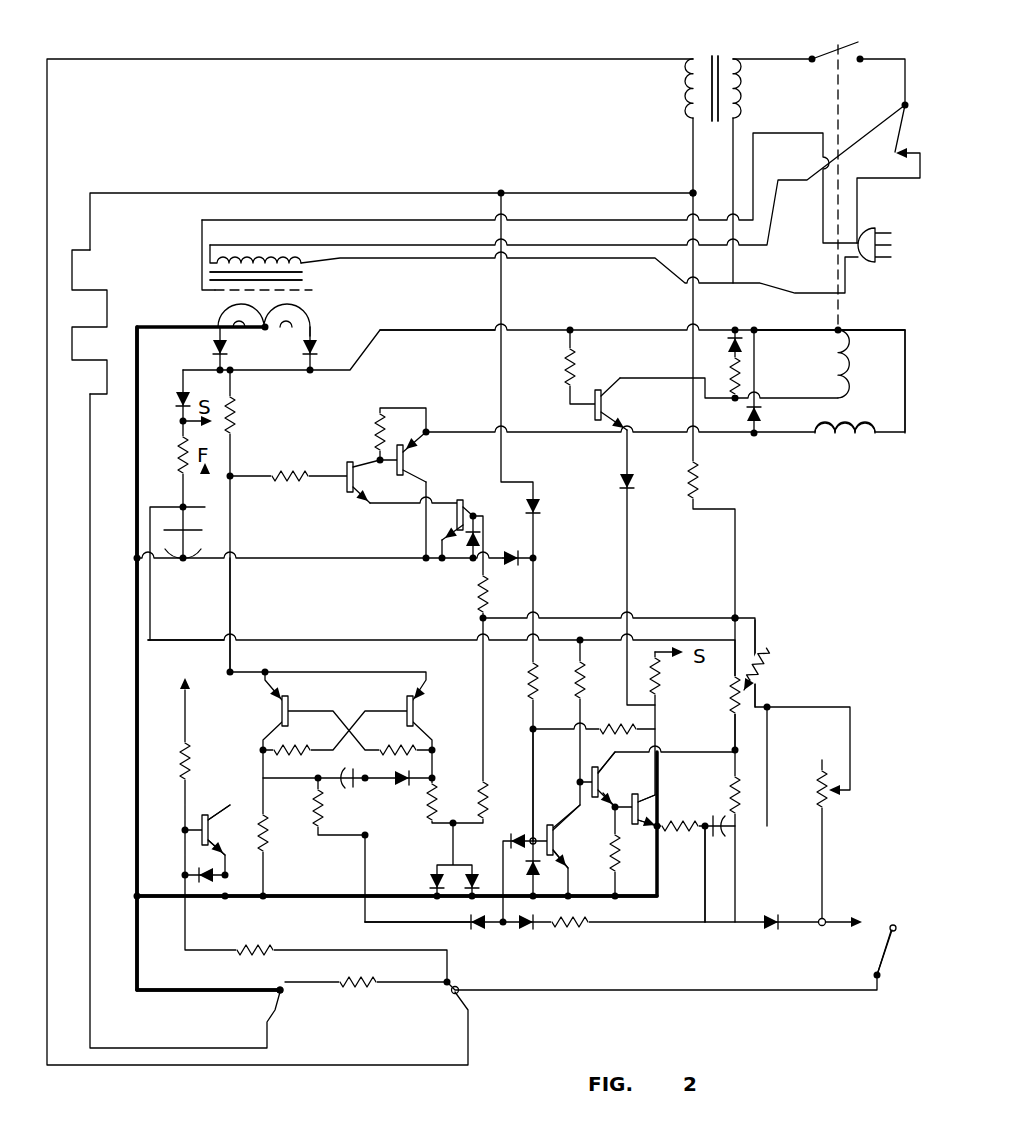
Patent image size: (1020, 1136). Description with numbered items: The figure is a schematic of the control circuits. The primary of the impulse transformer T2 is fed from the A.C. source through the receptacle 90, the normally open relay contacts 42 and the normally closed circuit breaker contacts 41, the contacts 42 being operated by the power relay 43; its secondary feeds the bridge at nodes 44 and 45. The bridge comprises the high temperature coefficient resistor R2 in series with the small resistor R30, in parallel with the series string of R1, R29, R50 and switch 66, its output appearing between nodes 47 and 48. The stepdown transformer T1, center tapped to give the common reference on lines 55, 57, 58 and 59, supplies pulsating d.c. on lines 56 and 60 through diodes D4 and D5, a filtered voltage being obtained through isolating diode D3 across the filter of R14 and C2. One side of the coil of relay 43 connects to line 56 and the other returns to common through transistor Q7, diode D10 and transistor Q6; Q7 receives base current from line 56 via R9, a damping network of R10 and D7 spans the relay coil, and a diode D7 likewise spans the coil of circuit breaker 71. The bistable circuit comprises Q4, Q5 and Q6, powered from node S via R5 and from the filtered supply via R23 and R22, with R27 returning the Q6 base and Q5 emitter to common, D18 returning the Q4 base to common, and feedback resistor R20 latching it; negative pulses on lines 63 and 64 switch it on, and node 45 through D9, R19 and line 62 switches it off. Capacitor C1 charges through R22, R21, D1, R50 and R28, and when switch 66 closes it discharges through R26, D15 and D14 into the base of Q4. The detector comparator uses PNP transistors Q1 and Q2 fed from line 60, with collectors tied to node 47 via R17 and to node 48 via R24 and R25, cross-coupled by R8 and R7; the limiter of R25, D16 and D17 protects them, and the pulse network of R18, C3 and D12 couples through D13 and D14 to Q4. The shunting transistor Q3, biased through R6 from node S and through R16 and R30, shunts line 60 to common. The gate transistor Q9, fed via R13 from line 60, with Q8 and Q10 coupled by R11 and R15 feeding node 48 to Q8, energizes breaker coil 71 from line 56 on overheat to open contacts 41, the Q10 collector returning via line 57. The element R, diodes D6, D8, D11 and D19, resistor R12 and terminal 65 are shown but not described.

The low voltage stepdown transformer T1 is at (272, 285).
The high current generating impulse transformer T2 is at (707, 70).
The resistor R2 is at (96, 296).
The relay contacts 42 is at (820, 64).
The circuit breaker contacts 41 is at (890, 140).
The node 45 is at (690, 190).
The receptacle 90 is at (866, 230).
The line 56 is at (622, 330).
The relay R is at (803, 381).
The diode D6 is at (730, 340).
The resistor R10 is at (745, 385).
The power relay 43 is at (848, 381).
The diode D7 is at (762, 412).
The circuit breaker 71 is at (880, 440).
The resistor R1 is at (701, 488).
The resistor R9 is at (576, 372).
The transistor Q7 is at (606, 404).
The diode D10 is at (634, 486).
The diode D9 is at (541, 510).
The diode D4 is at (212, 346).
The diode D5 is at (302, 340).
The isolating diode D3 is at (178, 398).
The resistor R12 is at (239, 418).
The resistor R14 is at (175, 452).
The capacitor C2 is at (200, 533).
The resistor R13 is at (296, 487).
The resistor R11 is at (373, 412).
The transistor Q9 is at (350, 470).
The transistor Q10 is at (406, 460).
The transistor Q8 is at (473, 499).
The diode D19 is at (480, 536).
The diode D8 is at (511, 579).
The resistor R15 is at (476, 596).
The line 57 is at (325, 566).
The line 60 is at (232, 606).
The common line 55 is at (136, 710).
The resistor R6 is at (182, 748).
The transistor Q3 is at (214, 816).
The diode D11 is at (205, 872).
The PNP transistor Q1 is at (281, 713).
The PNP transistor Q2 is at (414, 713).
The resistor R7 is at (299, 738).
The feedback resistor R8 is at (398, 750).
The capacitor C3 is at (343, 776).
The diode D12 is at (395, 791).
The resistor R18 is at (299, 808).
The resistor R17 is at (286, 835).
The resistor R24 is at (428, 814).
The resistor R25 is at (480, 796).
The diode D14 is at (516, 833).
The diode D17 is at (450, 840).
The diode D16 is at (432, 884).
The transistor Q4 is at (557, 838).
The diode D18 is at (535, 852).
The resistor R19 is at (527, 690).
The resistor R23 is at (580, 672).
The feedback resistor R20 is at (606, 735).
The line 62 is at (537, 770).
The resistor R5 is at (670, 676).
The resistor R22 is at (728, 702).
The resistor R29 is at (771, 660).
The node 48 is at (738, 618).
The resistor R21 is at (727, 792).
The capacitor C1 is at (720, 835).
The resistor R28 is at (682, 837).
The resistor R27 is at (610, 852).
The transistor Q5 is at (599, 786).
The transistor Q6 is at (638, 812).
The resistor R50 is at (828, 806).
The common line 58 is at (168, 902).
The resistor R16 is at (256, 939).
The common line 59 is at (235, 990).
The node 47 is at (283, 992).
The resistor R30 is at (366, 990).
The node 44 is at (460, 994).
The line 64 is at (400, 925).
The diode D13 is at (488, 936).
The diode D15 is at (543, 936).
The resistor R26 is at (585, 936).
The line 63 is at (691, 926).
The diode D1 is at (771, 937).
The terminal 65 is at (861, 928).
The switch 66 is at (886, 942).